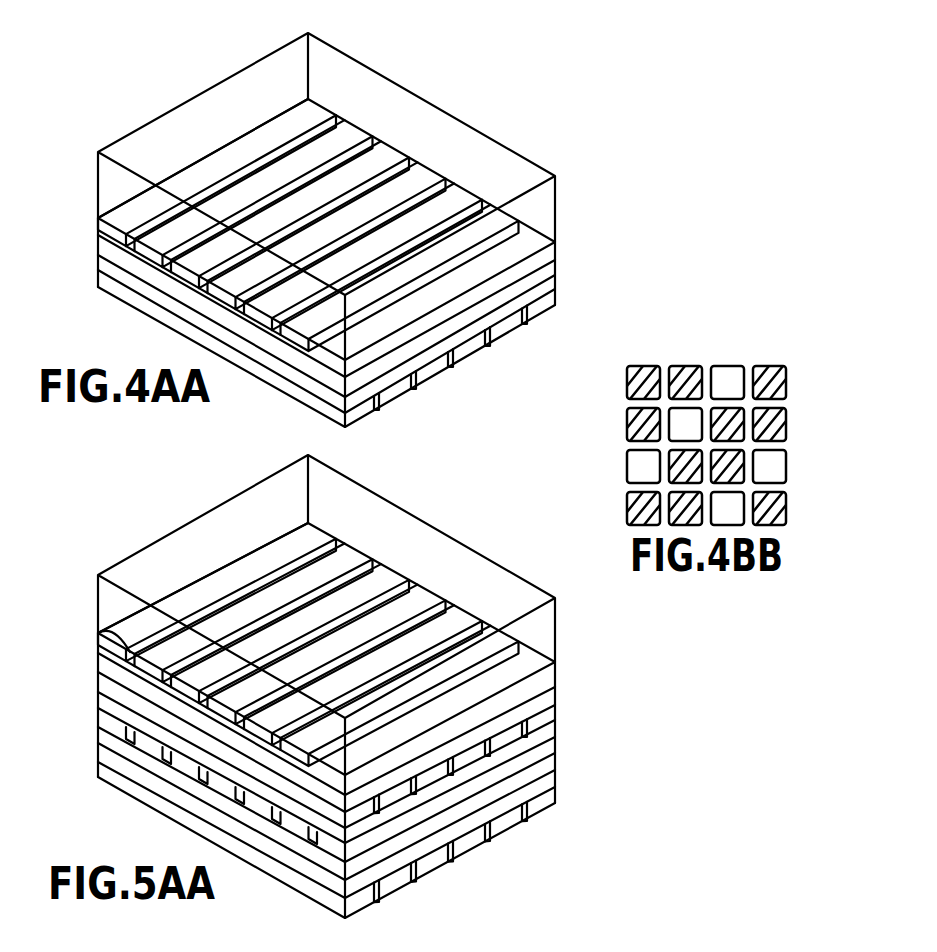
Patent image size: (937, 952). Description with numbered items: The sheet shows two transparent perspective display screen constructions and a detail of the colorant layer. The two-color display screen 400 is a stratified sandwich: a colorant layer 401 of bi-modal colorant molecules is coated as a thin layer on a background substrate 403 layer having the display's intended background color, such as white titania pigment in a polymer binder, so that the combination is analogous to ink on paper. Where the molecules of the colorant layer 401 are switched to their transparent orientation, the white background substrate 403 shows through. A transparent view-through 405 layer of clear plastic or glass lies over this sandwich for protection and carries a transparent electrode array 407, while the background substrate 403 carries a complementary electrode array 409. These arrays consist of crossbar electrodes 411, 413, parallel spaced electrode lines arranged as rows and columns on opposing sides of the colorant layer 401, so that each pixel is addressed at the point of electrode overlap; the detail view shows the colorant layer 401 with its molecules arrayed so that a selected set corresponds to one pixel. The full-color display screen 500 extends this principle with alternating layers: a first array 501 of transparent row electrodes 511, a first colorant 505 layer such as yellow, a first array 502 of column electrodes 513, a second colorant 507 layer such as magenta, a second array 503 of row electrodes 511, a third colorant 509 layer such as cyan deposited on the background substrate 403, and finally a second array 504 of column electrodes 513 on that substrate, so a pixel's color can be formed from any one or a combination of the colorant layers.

In FIG. 4AA, the display screen 400 is at (150, 100).
In FIG. 4AA, the view-through layer 405 is at (556, 203).
In FIG. 5AA, the view-through layer 405 is at (556, 630).
In FIG. 4AA, the transparent electrode array 407 is at (98, 227).
In FIG. 4AA, the crossbar electrodes 411 is at (305, 362).
In FIG. 4AA, the background substrate layer 403 is at (98, 262).
In FIG. 5AA, the background substrate layer 403 is at (98, 753).
In FIG. 4AA, the colorant layer 401 is at (556, 266).
In FIG. 4BB, the colorant layer 401 is at (804, 379).
In FIG. 4AA, the complementary electrode array 409 is at (556, 299).
In FIG. 4AA, the crossbar electrodes 413 is at (455, 368).
In FIG. 5AA, the display screen 500 is at (150, 518).
In FIG. 5AA, the row electrode array 501 is at (98, 651).
In FIG. 5AA, the row electrodes 511 is at (100, 636).
In FIG. 5AA, the first colorant layer 505 is at (556, 687).
In FIG. 5AA, the column electrode array 502 is at (98, 687).
In FIG. 5AA, the column electrodes 513 is at (556, 704).
In FIG. 5AA, the second colorant layer 507 is at (556, 729).
In FIG. 5AA, the row electrode array 503 is at (98, 719).
In FIG. 5AA, the third colorant layer 509 is at (556, 764).
In FIG. 5AA, the column electrode array 504 is at (556, 796).